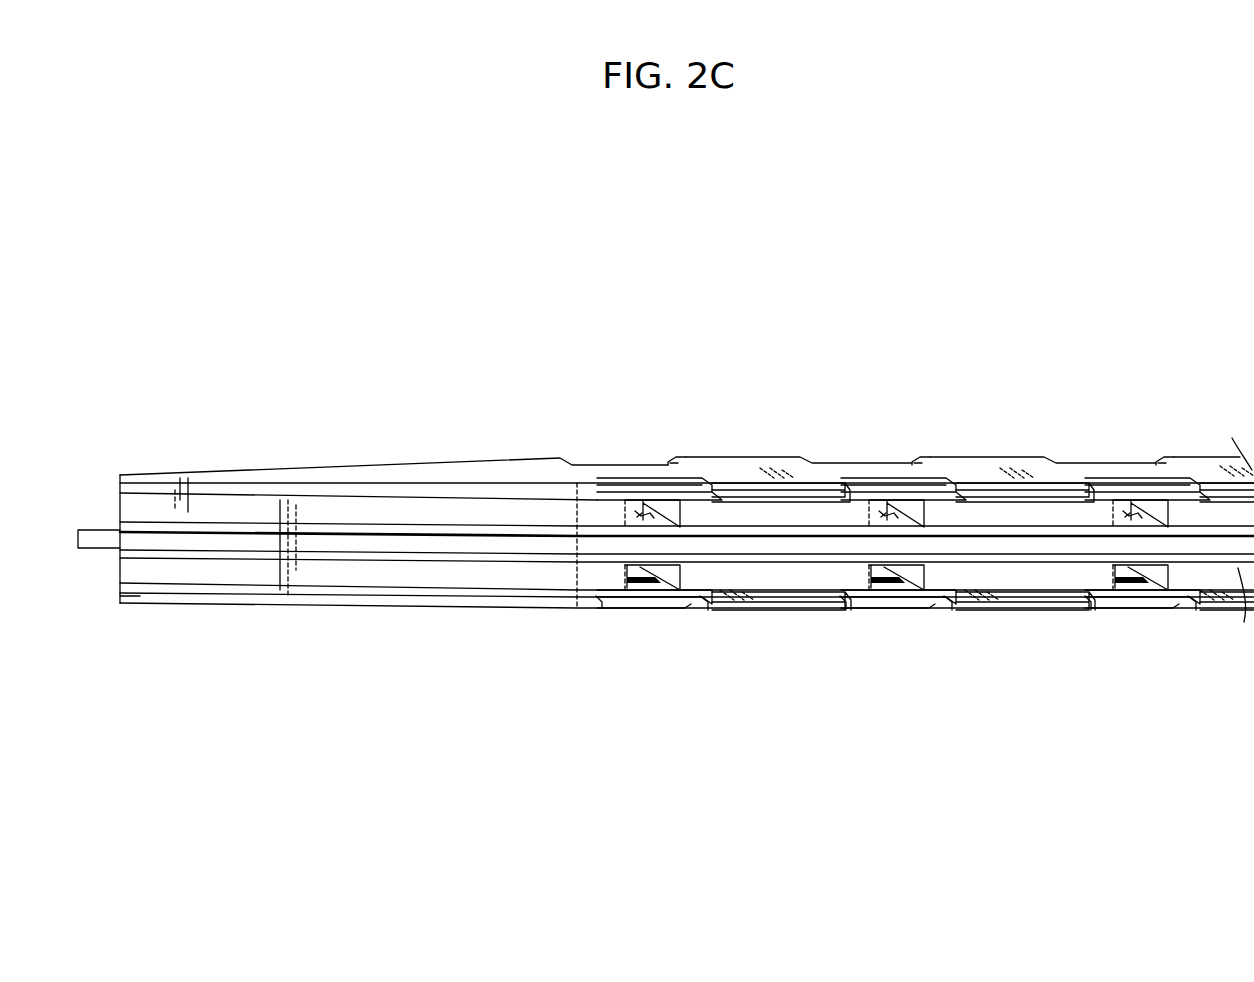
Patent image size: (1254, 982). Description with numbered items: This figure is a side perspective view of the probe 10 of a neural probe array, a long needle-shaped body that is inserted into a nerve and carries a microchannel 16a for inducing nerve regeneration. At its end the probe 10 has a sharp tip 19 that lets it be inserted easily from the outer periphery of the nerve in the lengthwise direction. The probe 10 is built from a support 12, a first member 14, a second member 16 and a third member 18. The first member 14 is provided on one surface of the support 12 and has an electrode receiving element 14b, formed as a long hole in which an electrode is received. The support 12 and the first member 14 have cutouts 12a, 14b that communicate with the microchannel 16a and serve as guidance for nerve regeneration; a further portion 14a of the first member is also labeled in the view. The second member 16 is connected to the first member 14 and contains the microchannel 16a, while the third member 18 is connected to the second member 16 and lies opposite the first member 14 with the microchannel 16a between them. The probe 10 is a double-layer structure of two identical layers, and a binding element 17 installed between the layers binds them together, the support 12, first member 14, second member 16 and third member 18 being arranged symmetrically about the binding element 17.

The probe 10 is at (262, 290).
The support 12 is at (455, 470).
The cutout 12a is at (925, 485).
The first member 14 is at (333, 482).
The upper engaging block 14a is at (858, 495).
The electrode receiving element 14b is at (638, 590).
The second member 16 is at (733, 510).
The microchannel 16a is at (648, 518).
The binding element 17 is at (97, 552).
The third member 18 is at (248, 527).
The sharp tip 19 is at (125, 612).